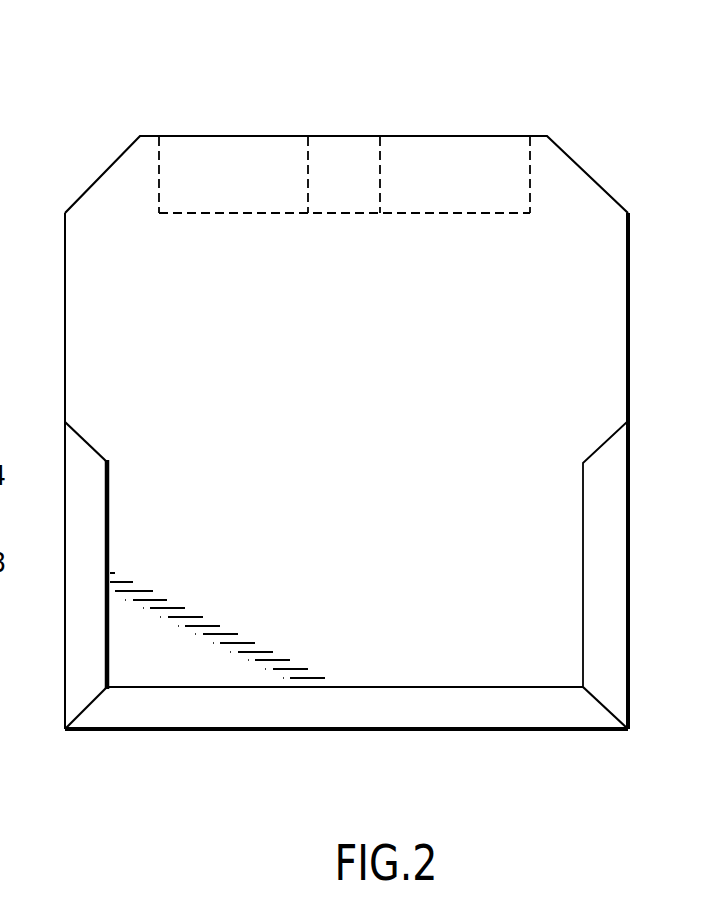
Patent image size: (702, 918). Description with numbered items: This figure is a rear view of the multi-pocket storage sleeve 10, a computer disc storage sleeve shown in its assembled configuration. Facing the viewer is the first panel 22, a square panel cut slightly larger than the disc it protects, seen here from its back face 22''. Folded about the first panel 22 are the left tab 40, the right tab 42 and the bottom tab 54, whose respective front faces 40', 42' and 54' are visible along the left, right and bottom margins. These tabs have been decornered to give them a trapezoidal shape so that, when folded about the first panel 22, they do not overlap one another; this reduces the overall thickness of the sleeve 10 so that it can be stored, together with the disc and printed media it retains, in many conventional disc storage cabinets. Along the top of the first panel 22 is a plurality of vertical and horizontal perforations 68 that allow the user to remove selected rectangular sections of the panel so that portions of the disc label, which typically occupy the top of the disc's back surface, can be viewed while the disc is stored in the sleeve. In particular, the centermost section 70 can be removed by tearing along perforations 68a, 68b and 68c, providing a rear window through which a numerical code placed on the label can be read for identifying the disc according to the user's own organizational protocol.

The multi-pocket storage sleeve 10 is at (348, 98).
The first panel 22 is at (32, 471).
The back face of first panel 22'' is at (342, 427).
The left tab 40 is at (562, 554).
The front face of left tab 40' is at (632, 471).
The right tab 42 is at (195, 555).
The front face of right tab 42' is at (60, 653).
The bottom tab 54 is at (346, 781).
The front face of bottom tab 54' is at (345, 666).
The perforations 68 is at (159, 177).
The perforation 68a is at (380, 163).
The perforation 68b is at (345, 214).
The perforation 68c is at (308, 174).
The centermost section 70 is at (333, 189).